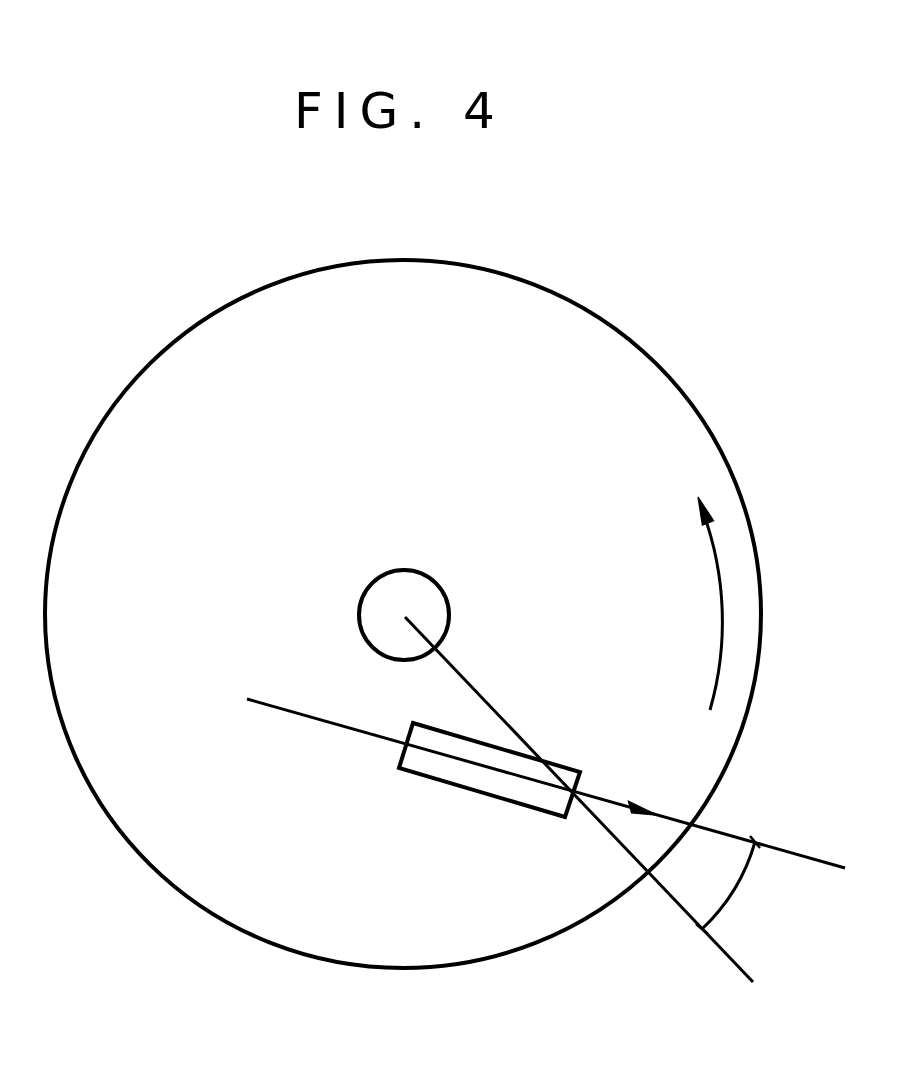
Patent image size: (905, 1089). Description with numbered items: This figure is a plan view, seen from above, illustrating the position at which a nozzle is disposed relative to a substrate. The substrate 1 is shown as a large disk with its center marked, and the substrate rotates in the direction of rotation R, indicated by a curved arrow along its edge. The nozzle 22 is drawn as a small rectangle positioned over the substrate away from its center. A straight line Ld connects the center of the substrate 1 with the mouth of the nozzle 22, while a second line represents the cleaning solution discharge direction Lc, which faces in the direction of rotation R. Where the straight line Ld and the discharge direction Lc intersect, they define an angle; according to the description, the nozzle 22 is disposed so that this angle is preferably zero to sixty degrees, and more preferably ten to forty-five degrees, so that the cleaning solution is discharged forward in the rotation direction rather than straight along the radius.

The substrate 1 is at (622, 332).
The nozzle 22 is at (478, 792).
The direction of rotation R is at (699, 603).
The cleaning solution discharge direction Lc is at (546, 767).
The straight line Ld is at (603, 827).